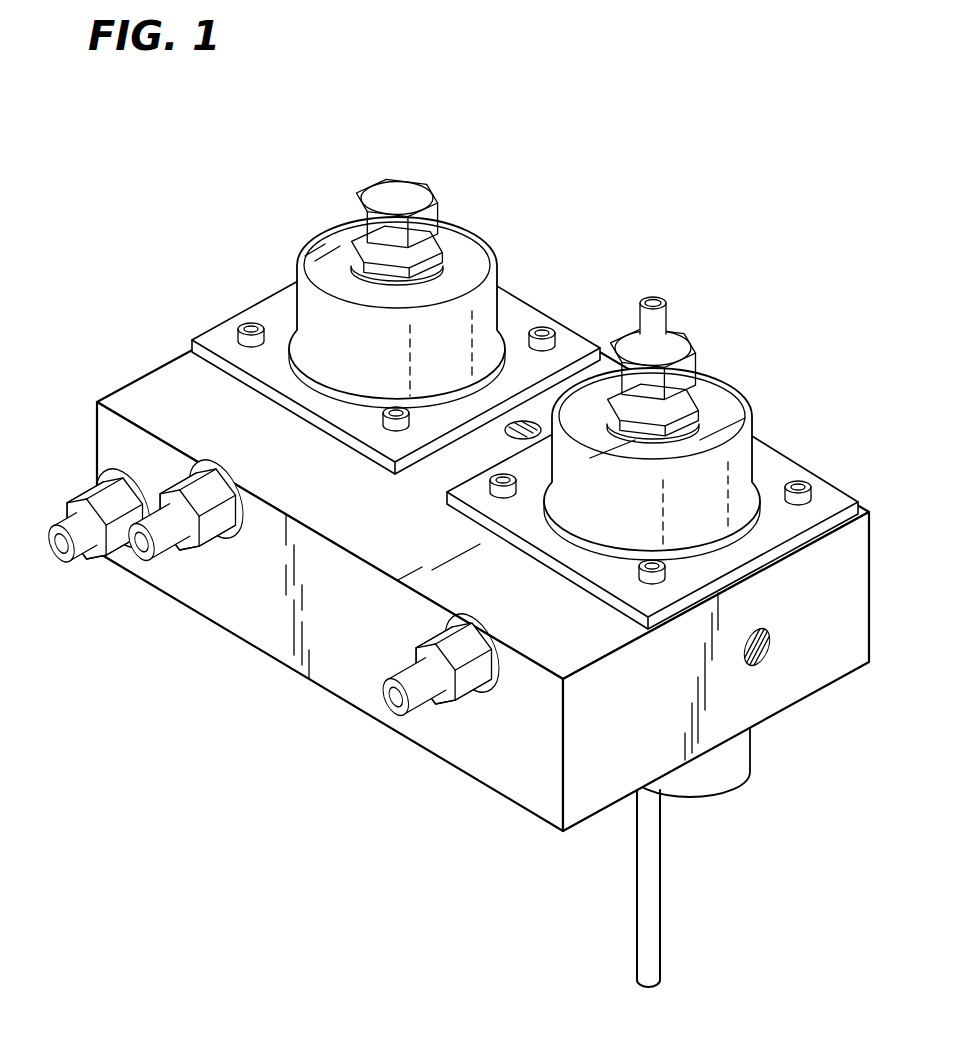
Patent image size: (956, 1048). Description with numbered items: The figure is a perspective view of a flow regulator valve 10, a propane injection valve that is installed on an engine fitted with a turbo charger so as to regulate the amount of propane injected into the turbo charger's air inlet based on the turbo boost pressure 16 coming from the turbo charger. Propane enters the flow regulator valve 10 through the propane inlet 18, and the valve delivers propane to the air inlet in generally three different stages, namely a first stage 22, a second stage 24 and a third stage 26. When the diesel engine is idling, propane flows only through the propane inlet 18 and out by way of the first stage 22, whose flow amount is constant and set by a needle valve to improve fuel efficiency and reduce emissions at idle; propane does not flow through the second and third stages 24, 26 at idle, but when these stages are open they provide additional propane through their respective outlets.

The flow regulator valve 10 is at (28, 843).
The turbo boost pressure 16 is at (646, 890).
The propane inlet 18 is at (770, 660).
The first stage 22 is at (30, 549).
The second stage 24 is at (891, 447).
The third stage 26 is at (633, 298).